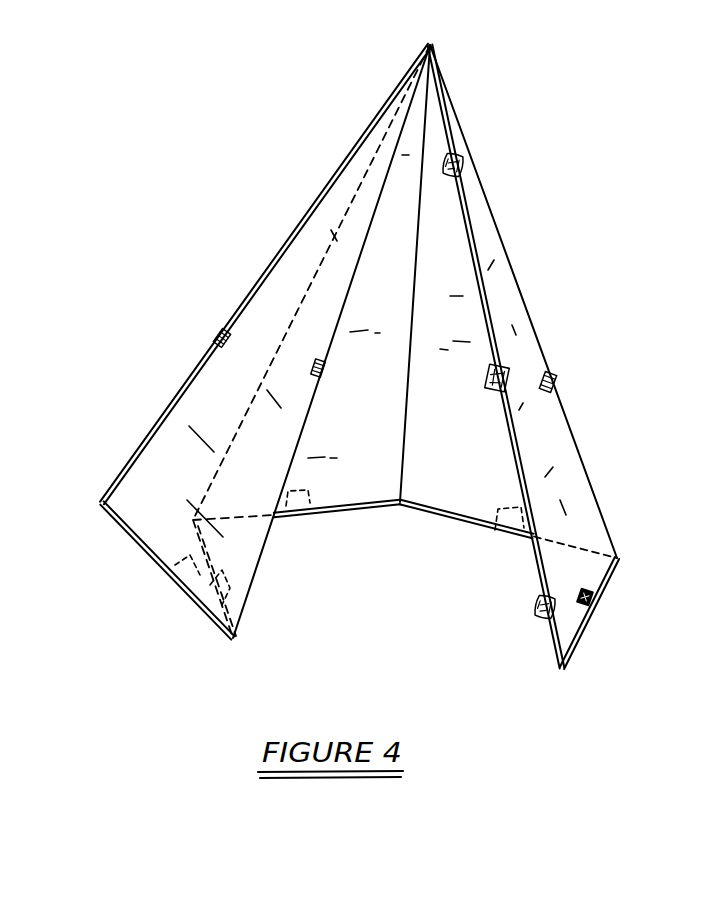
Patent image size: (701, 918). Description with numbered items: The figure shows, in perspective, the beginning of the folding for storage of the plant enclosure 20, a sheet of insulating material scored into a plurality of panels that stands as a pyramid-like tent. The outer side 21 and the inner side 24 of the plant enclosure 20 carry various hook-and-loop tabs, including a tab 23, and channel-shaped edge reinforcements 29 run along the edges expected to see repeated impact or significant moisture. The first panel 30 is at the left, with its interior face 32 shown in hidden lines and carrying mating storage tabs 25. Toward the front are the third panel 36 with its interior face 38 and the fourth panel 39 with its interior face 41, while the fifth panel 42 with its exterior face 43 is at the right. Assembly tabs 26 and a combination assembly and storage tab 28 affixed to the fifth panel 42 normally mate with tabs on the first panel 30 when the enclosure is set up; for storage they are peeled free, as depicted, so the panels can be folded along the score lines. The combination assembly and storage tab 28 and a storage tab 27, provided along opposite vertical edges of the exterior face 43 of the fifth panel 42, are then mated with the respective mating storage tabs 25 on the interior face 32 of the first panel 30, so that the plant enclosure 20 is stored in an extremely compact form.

The plant enclosure 20 is at (507, 126).
The outer side 21 is at (578, 481).
The tab 23 is at (598, 594).
The inner side 24 is at (127, 466).
The mating storage tab 25 is at (213, 337).
The assembly tab 26 is at (468, 177).
The storage tab 27 is at (558, 376).
The combination assembly and storage tab 28 is at (483, 386).
The edge reinforcement 29 is at (291, 235).
The first panel 30 is at (143, 513).
The interior face of the first panel 32 is at (226, 413).
The third panel 36 is at (331, 489).
The interior face of the third panel 38 is at (373, 437).
The fourth panel 39 is at (447, 500).
The interior face of the fourth panel 41 is at (453, 346).
The fifth panel 42 is at (485, 237).
The exterior face of the fifth panel 43 is at (516, 316).